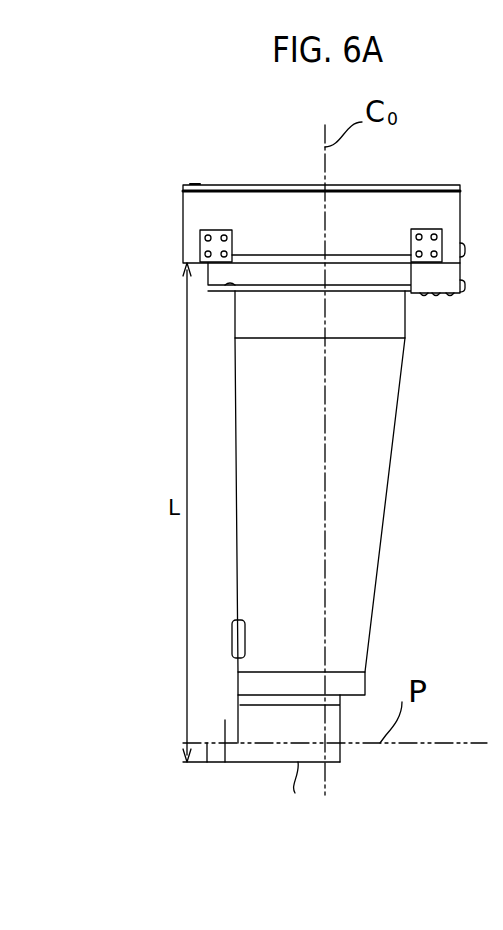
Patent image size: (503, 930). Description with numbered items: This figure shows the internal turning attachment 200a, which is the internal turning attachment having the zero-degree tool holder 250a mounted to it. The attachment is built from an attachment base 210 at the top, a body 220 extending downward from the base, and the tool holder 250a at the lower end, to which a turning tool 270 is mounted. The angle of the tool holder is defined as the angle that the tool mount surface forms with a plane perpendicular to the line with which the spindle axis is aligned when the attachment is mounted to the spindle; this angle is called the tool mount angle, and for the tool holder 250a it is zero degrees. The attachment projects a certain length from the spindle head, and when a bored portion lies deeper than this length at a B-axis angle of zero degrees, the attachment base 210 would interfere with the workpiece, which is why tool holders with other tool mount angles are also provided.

The internal turning attachment 200a is at (149, 489).
The attachment base 210 is at (200, 213).
The body 220 is at (285, 438).
The 0° tool holder 250a is at (235, 727).
The turning tool 270 is at (207, 760).